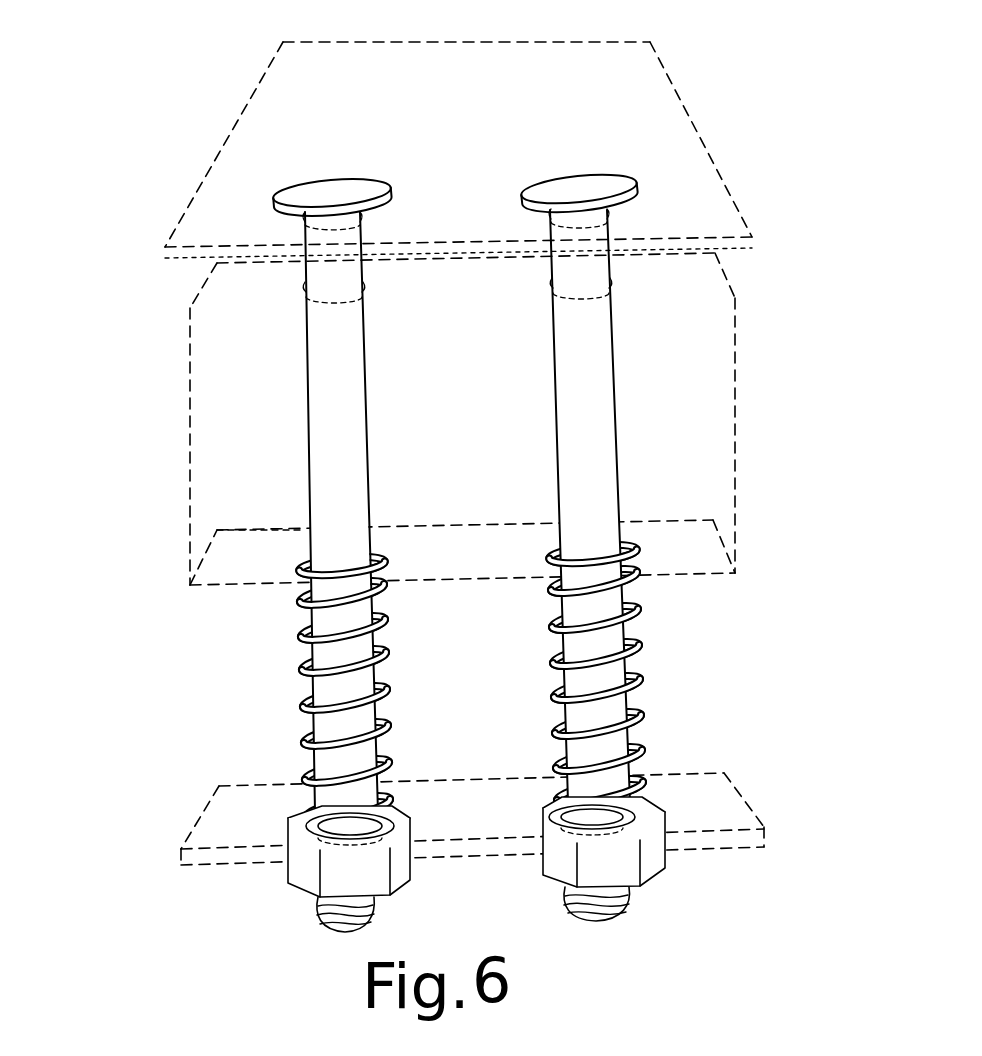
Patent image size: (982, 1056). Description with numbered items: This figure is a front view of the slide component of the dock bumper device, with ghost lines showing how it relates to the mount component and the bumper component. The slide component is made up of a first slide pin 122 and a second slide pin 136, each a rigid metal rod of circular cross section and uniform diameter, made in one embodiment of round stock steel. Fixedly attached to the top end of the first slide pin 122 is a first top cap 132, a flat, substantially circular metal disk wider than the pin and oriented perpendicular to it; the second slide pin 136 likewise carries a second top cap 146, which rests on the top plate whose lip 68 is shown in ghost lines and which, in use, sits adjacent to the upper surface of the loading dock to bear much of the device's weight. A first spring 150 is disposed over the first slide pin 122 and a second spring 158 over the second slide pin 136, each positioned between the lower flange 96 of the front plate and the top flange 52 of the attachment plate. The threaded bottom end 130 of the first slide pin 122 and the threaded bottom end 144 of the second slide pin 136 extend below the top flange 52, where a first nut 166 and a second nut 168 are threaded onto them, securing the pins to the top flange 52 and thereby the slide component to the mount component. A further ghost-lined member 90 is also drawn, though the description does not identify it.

The lip 68 is at (437, 92).
The mounting block 90 is at (673, 277).
The lower flange 96 is at (253, 555).
The top flange 52 is at (693, 793).
The first slide pin 122 is at (330, 350).
The first top cap 132 is at (320, 196).
The first spring 150 is at (303, 670).
The first nut 166 is at (307, 867).
The threaded bottom end 130 is at (323, 918).
The second slide pin 136 is at (588, 402).
The second top cap 146 is at (587, 191).
The second spring 158 is at (632, 642).
The second nut 168 is at (652, 862).
The threaded bottom end 144 is at (600, 913).